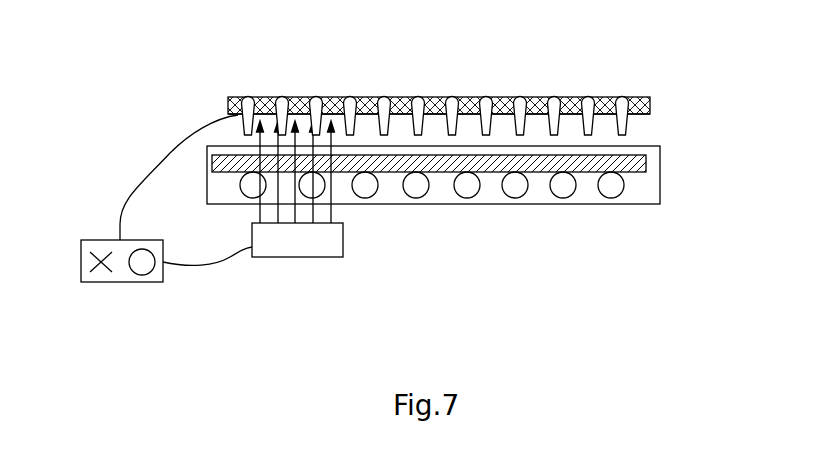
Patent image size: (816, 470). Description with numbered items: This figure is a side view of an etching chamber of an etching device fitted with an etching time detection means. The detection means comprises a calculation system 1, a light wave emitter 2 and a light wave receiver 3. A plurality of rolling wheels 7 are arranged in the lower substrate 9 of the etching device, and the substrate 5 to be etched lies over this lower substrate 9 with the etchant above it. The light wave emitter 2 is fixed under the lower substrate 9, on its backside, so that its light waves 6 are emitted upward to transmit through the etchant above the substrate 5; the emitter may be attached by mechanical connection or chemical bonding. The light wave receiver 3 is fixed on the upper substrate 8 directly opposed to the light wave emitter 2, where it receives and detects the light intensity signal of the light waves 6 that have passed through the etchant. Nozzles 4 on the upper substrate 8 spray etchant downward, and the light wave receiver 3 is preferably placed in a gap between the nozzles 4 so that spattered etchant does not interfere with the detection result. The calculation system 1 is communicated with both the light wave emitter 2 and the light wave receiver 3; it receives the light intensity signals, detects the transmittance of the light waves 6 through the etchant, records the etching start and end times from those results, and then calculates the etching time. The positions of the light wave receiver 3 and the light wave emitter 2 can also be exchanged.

The calculation system 1 is at (139, 272).
The light wave emitter 2 is at (300, 240).
The light wave receiver 3 is at (294, 113).
The nozzle 4 is at (248, 122).
The substrate 5 is at (625, 168).
The light beams 6 is at (332, 172).
The rolling wheel 7 is at (417, 183).
The upper substrate of an etching device 8 is at (403, 97).
The lower substrate of an etching device 9 is at (488, 183).